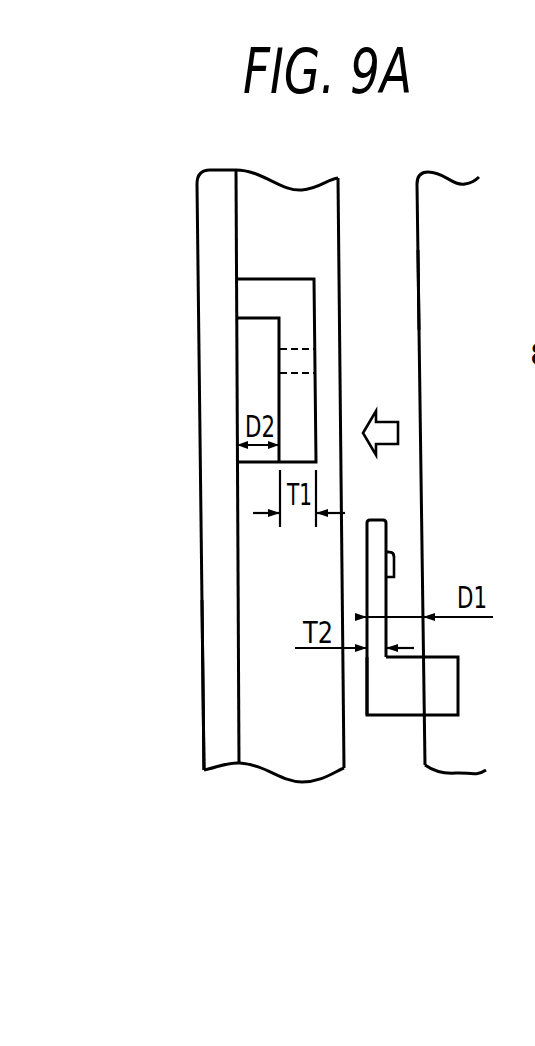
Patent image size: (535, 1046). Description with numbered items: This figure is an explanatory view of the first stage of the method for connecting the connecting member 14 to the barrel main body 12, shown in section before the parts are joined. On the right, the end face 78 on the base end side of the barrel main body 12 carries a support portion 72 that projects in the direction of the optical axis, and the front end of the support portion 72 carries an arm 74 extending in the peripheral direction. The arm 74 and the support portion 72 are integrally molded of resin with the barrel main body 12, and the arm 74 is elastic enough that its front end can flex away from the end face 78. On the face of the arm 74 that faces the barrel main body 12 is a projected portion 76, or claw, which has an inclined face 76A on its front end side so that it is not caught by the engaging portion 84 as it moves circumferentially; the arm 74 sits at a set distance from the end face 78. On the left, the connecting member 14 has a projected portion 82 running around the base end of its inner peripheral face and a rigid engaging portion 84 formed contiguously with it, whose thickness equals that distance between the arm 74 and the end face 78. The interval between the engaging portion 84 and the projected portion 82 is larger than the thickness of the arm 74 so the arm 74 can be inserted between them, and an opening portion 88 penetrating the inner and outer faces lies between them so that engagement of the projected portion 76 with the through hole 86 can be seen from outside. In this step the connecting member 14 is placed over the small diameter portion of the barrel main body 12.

The connecting member 14 is at (284, 790).
The barrel main body 12 is at (452, 780).
The opening portion 88 is at (258, 362).
The through hole 86 is at (305, 356).
The engaging portion 84 is at (305, 388).
The projected portion 82 is at (222, 753).
The end face 78 is at (418, 290).
The arm 74 is at (387, 521).
The projected portion (claw) 76 is at (395, 565).
The inclined face 76A is at (388, 549).
The support portion 72 is at (394, 717).